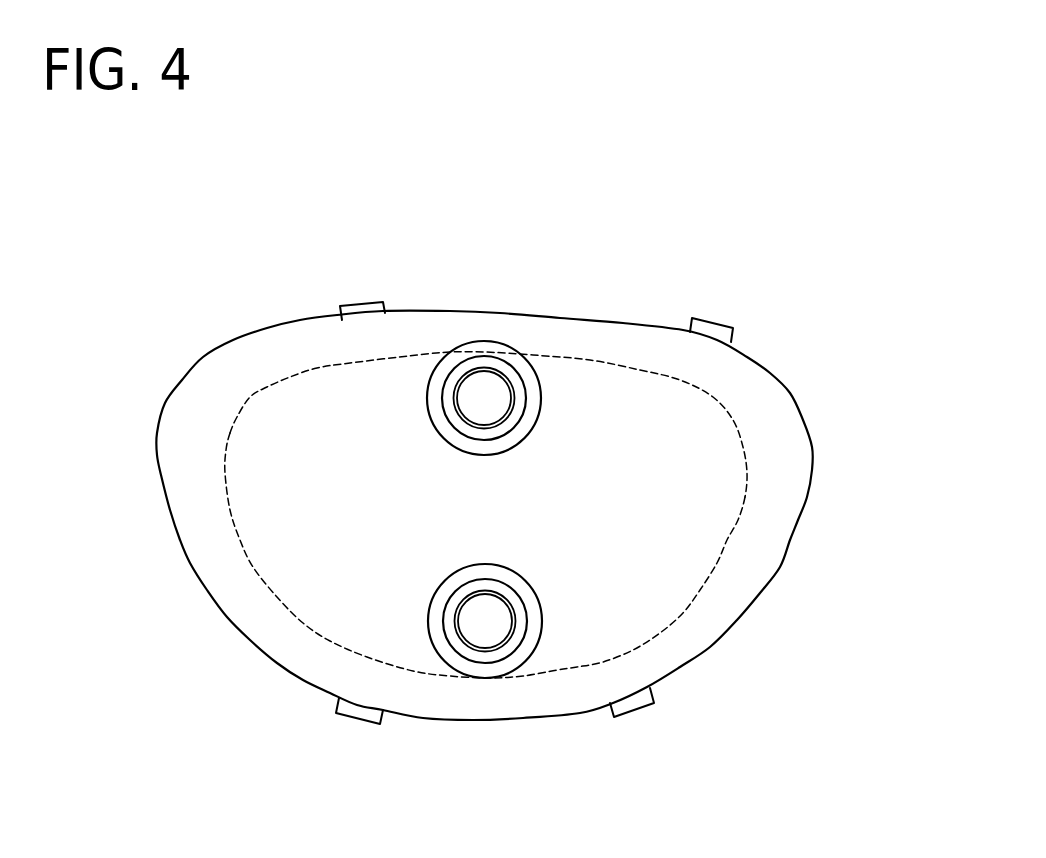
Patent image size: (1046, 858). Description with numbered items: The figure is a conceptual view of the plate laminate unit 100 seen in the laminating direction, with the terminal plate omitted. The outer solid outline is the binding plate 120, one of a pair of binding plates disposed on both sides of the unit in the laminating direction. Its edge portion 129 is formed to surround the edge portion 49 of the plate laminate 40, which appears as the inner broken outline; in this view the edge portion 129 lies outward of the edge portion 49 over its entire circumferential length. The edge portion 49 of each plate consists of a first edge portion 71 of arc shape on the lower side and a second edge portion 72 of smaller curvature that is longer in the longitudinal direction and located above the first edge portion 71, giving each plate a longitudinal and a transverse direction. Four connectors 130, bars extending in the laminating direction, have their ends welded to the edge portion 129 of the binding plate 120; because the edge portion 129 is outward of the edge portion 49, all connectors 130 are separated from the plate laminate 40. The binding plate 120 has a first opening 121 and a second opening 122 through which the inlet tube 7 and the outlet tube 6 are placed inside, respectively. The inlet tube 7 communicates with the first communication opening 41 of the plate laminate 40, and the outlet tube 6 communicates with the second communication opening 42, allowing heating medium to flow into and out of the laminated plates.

The plate laminate unit 100 is at (848, 162).
The binding plate 120 is at (832, 432).
The edge portion of the binding plate 129 is at (790, 384).
The connector 130 is at (373, 300).
The edge portion of the plate 49 is at (415, 522).
The second edge portion 72 is at (620, 362).
The first edge portion 71 is at (578, 668).
The plate laminate 40 is at (215, 514).
The first opening 121 is at (485, 341).
The first communication opening 41 is at (520, 384).
The inlet tube 7 is at (489, 421).
The second opening 122 is at (430, 620).
The second communication opening 42 is at (513, 656).
The outlet tube 6 is at (500, 610).